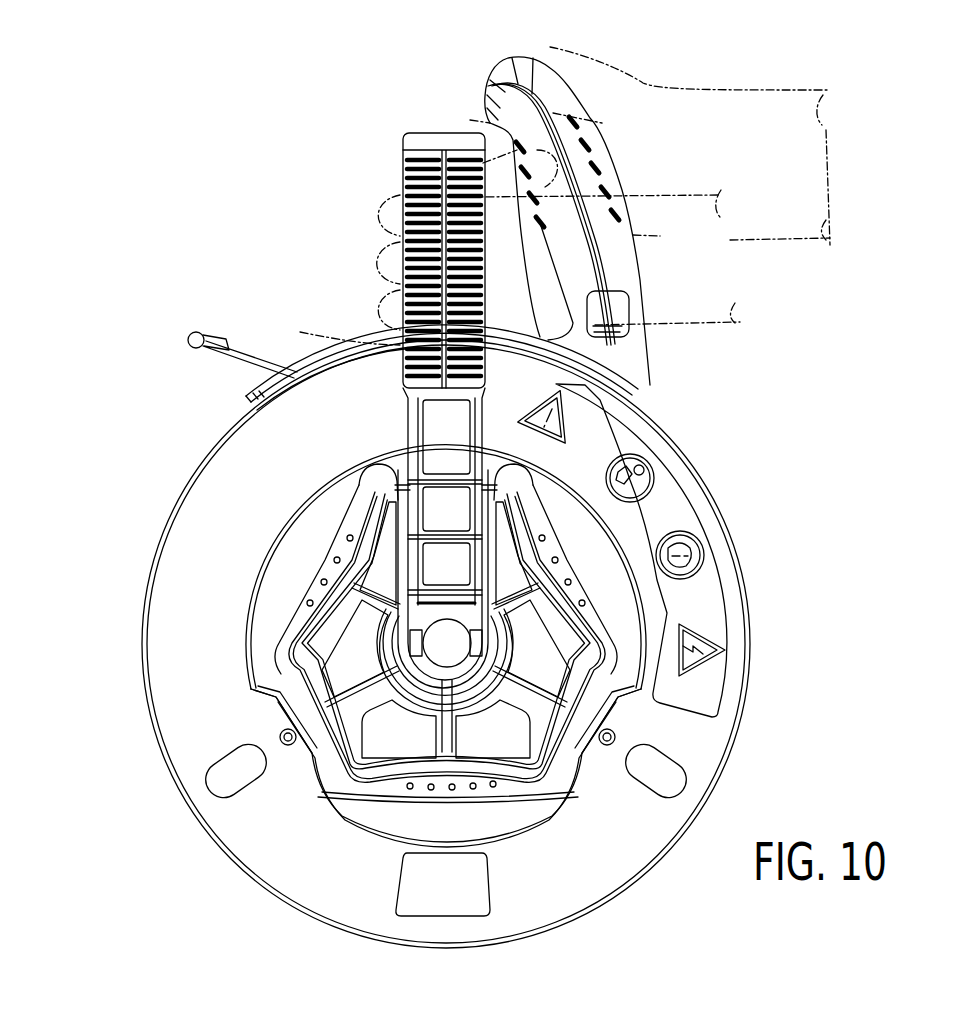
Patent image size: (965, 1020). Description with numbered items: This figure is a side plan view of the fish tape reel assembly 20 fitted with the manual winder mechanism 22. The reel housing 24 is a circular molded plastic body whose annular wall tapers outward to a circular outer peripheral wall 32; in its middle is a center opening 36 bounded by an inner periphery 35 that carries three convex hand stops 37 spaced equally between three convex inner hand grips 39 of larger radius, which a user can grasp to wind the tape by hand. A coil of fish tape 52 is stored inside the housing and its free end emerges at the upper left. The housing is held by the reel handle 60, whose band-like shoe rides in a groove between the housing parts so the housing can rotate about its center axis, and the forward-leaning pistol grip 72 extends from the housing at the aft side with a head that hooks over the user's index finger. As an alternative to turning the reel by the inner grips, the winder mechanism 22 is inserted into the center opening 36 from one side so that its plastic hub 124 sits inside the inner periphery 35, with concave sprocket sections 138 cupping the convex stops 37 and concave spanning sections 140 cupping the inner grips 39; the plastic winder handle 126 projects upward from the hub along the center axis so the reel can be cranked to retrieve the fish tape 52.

The fish tape reel assembly 20 is at (713, 482).
The manual winder mechanism 22 is at (406, 436).
The reel housing 24 is at (614, 896).
The circular outer peripheral wall 32 is at (493, 484).
The inner periphery 35 is at (505, 779).
The center opening 36 is at (567, 661).
The convex hand stops 37 is at (298, 695).
The convex inner hand grips 39 is at (330, 578).
The fish tape 52 is at (246, 372).
The reel handle 60 is at (651, 388).
The pistol grip 72 is at (619, 240).
The hub 124 is at (336, 632).
The winder handle 126 is at (405, 147).
The concave sprocket sections 138 is at (362, 520).
The concave spanning sections 140 is at (546, 590).